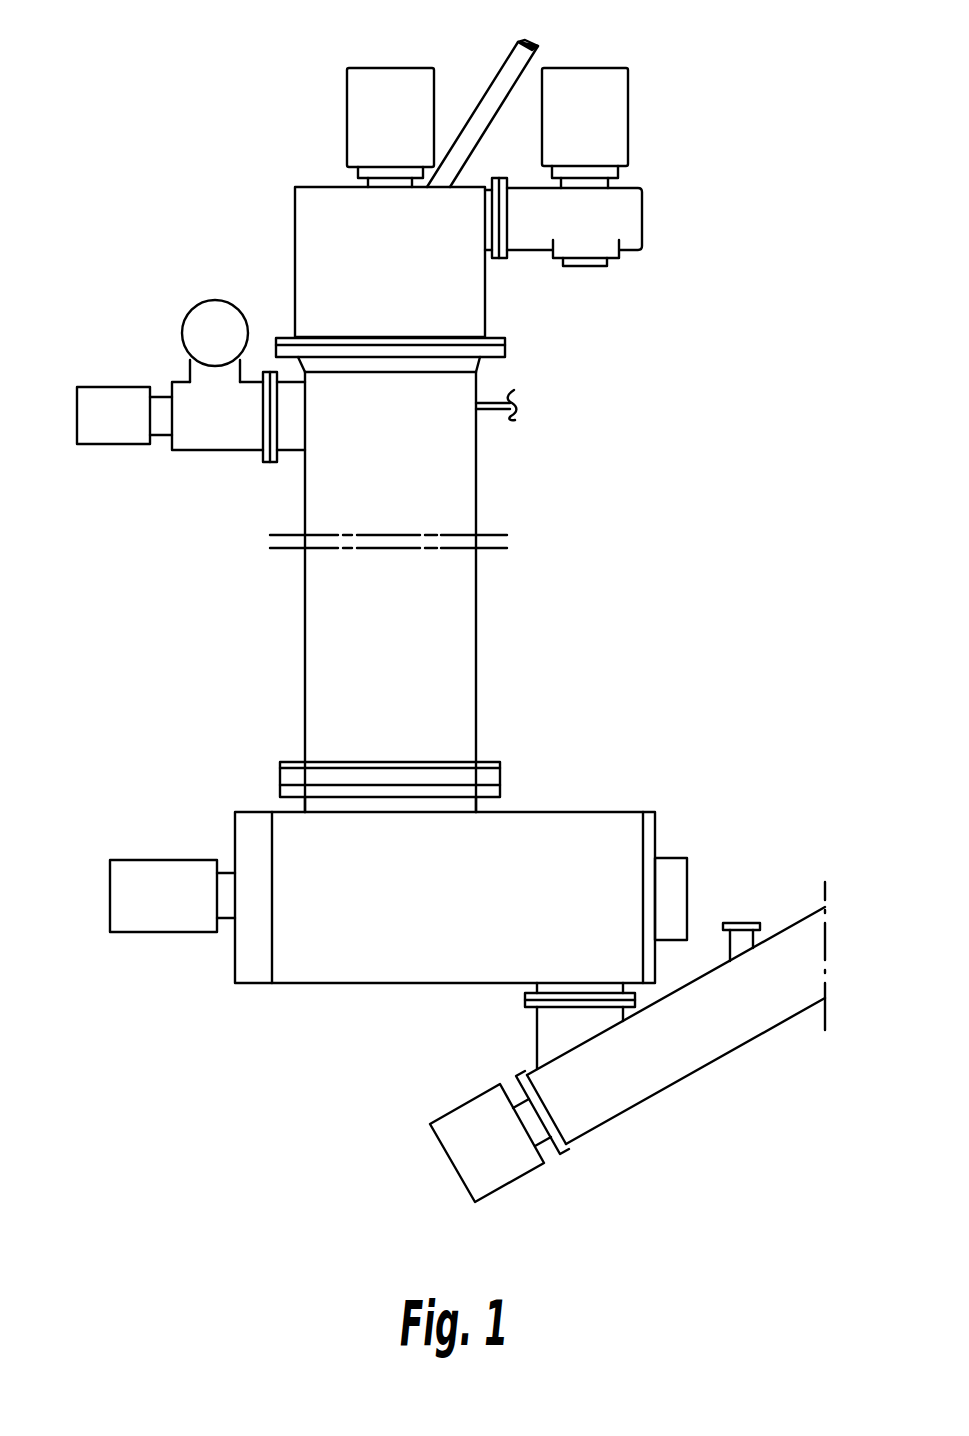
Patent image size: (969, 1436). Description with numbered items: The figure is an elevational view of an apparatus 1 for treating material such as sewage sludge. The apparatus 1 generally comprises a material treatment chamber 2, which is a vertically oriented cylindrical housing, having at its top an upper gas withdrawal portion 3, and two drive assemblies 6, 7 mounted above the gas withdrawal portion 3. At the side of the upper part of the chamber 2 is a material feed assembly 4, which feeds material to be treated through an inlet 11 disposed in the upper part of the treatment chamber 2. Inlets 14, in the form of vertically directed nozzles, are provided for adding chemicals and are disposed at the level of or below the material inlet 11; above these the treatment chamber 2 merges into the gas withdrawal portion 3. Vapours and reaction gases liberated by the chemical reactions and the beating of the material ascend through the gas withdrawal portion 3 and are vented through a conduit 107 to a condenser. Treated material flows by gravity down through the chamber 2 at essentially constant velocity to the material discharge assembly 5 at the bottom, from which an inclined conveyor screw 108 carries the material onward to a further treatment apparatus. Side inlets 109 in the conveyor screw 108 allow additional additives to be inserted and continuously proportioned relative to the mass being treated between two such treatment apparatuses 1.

The apparatus 1 is at (652, 520).
The material treatment chamber 2 is at (477, 662).
The upper gas withdrawal portion 3 is at (313, 245).
The material feed assembly 4 is at (195, 451).
The material discharge assembly 5 is at (608, 812).
The drive assembly 6 is at (363, 110).
The drive assembly 7 is at (605, 112).
The inlet 11 is at (292, 452).
The inlets 14 is at (498, 410).
The conduit 107 is at (503, 80).
The conveyor screw 108 is at (657, 1075).
The side inlets 109 is at (741, 922).